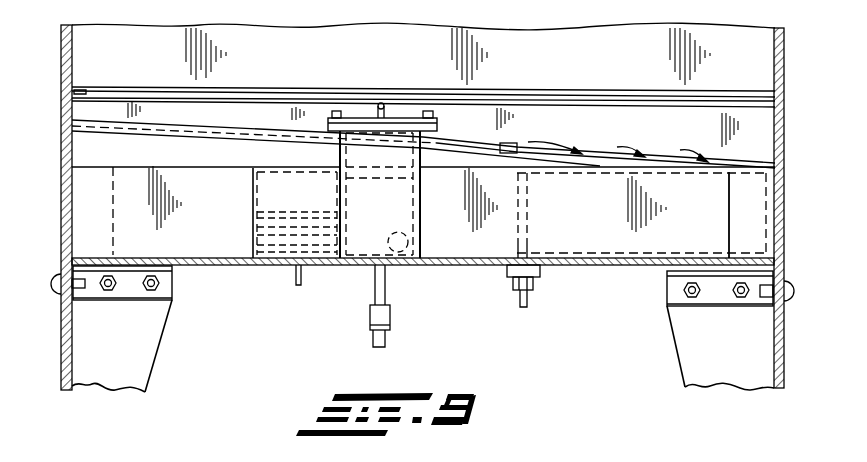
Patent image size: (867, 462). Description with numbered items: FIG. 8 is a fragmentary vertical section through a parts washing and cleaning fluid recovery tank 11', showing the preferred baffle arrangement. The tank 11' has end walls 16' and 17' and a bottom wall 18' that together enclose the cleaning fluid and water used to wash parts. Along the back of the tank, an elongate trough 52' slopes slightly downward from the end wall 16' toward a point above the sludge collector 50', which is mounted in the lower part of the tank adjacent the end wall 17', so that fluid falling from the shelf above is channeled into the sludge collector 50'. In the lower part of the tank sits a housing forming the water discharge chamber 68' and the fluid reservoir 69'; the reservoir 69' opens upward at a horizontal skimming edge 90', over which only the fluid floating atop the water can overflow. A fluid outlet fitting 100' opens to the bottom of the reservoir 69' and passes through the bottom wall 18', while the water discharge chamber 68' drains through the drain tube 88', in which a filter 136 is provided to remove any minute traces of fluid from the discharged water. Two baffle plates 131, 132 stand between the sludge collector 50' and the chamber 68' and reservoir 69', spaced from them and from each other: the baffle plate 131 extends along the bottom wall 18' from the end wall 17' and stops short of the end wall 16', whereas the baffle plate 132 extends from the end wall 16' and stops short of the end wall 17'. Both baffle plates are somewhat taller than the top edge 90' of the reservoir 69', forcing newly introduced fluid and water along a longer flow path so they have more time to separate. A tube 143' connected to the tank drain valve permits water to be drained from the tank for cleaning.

The tank 11' is at (796, 96).
The end wall 16' is at (49, 207).
The end wall 17' is at (794, 208).
The bottom wall 18' is at (423, 278).
The sludge collector 50' is at (642, 256).
The trough 52' is at (423, 114).
The water discharge chamber 68' is at (338, 180).
The fluid reservoir 69' is at (261, 213).
The drain tube 88' is at (407, 285).
The skimming edge 90' is at (226, 213).
The outlet fitting 100' is at (266, 292).
The baffle plate 131 is at (752, 200).
The baffle plate 132 is at (133, 182).
The filter 136 is at (370, 315).
The tube 143' is at (504, 254).